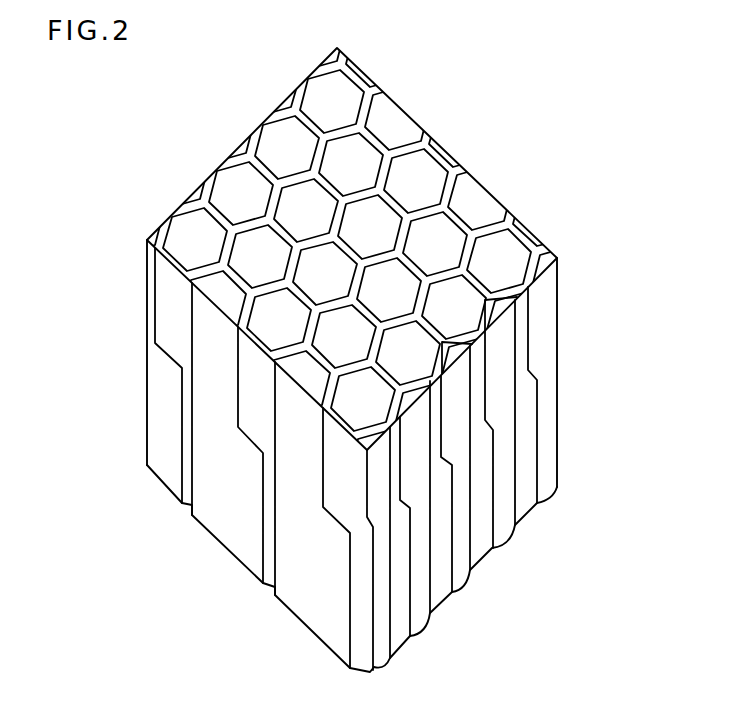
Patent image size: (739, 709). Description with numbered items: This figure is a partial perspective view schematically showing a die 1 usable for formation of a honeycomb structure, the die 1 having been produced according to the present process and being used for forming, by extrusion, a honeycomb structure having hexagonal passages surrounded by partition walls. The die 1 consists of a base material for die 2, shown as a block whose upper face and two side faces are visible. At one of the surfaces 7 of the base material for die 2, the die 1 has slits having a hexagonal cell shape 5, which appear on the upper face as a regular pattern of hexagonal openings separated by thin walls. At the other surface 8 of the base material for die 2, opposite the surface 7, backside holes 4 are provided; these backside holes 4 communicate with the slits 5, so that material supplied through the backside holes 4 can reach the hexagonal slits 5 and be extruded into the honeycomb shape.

The die 1 is at (504, 122).
The base material for die 2 is at (503, 331).
The backside holes 4 is at (527, 438).
The slits 5 is at (447, 187).
The surface 7 is at (494, 177).
The other surface 8 is at (503, 559).